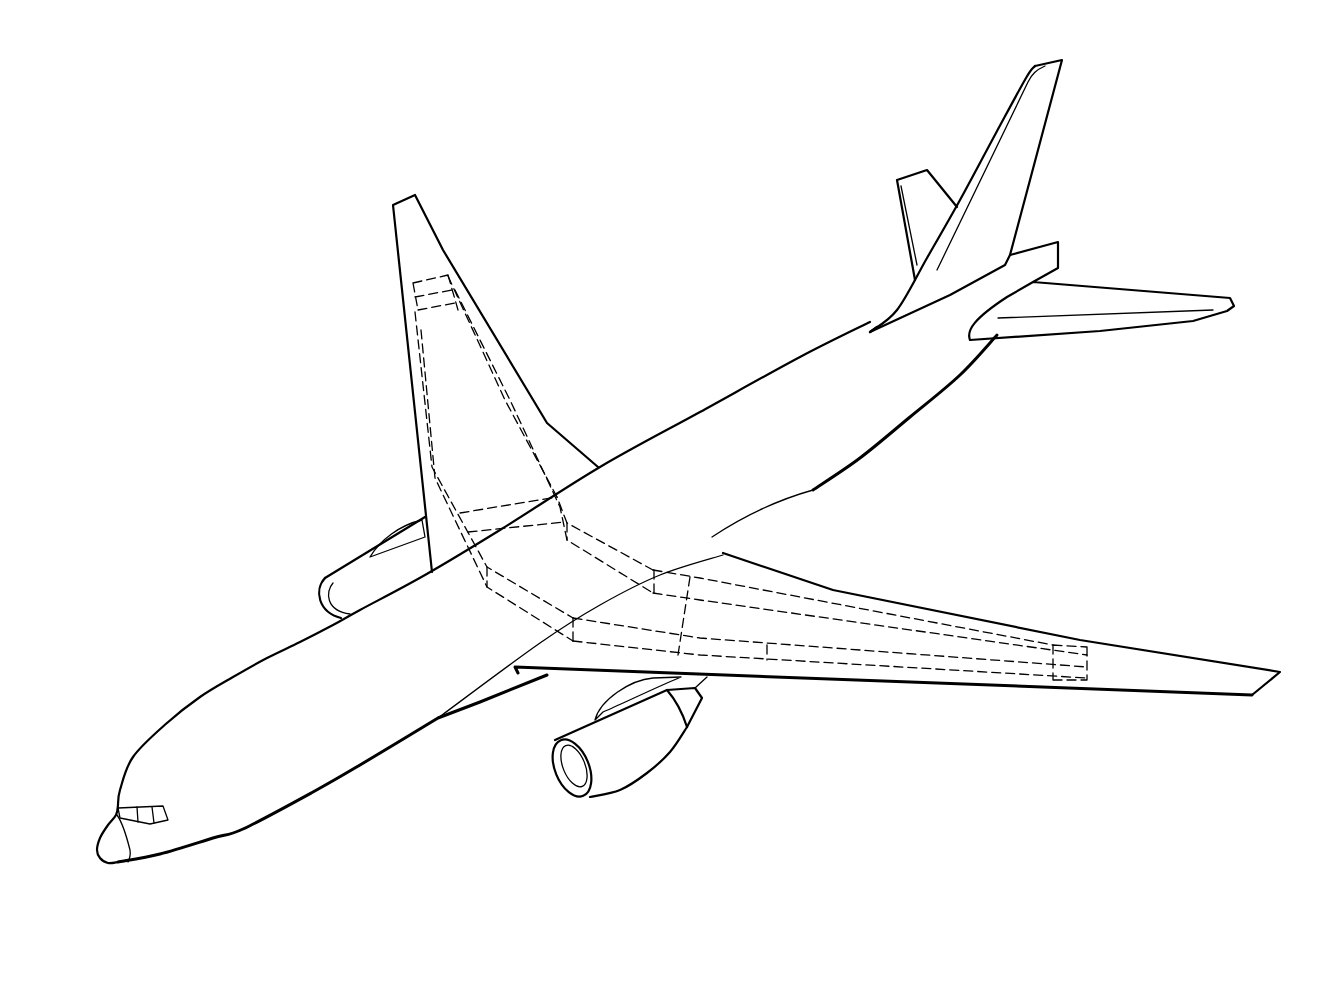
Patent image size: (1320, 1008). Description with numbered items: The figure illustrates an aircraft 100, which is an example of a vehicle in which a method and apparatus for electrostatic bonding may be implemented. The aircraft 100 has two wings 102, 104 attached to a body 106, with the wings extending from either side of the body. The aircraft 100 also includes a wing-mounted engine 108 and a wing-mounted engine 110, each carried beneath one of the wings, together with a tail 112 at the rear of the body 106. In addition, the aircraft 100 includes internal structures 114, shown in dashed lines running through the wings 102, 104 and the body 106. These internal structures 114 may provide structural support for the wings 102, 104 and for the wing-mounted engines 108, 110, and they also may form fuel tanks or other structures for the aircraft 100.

The aircraft 100 is at (270, 278).
The wing 102 is at (436, 233).
The wing 104 is at (1167, 652).
The body 106 is at (742, 388).
The wing-mounted engine 108 is at (357, 546).
The wing-mounted engine 110 is at (630, 786).
The tail 112 is at (985, 153).
The internal structures 114 is at (872, 602).